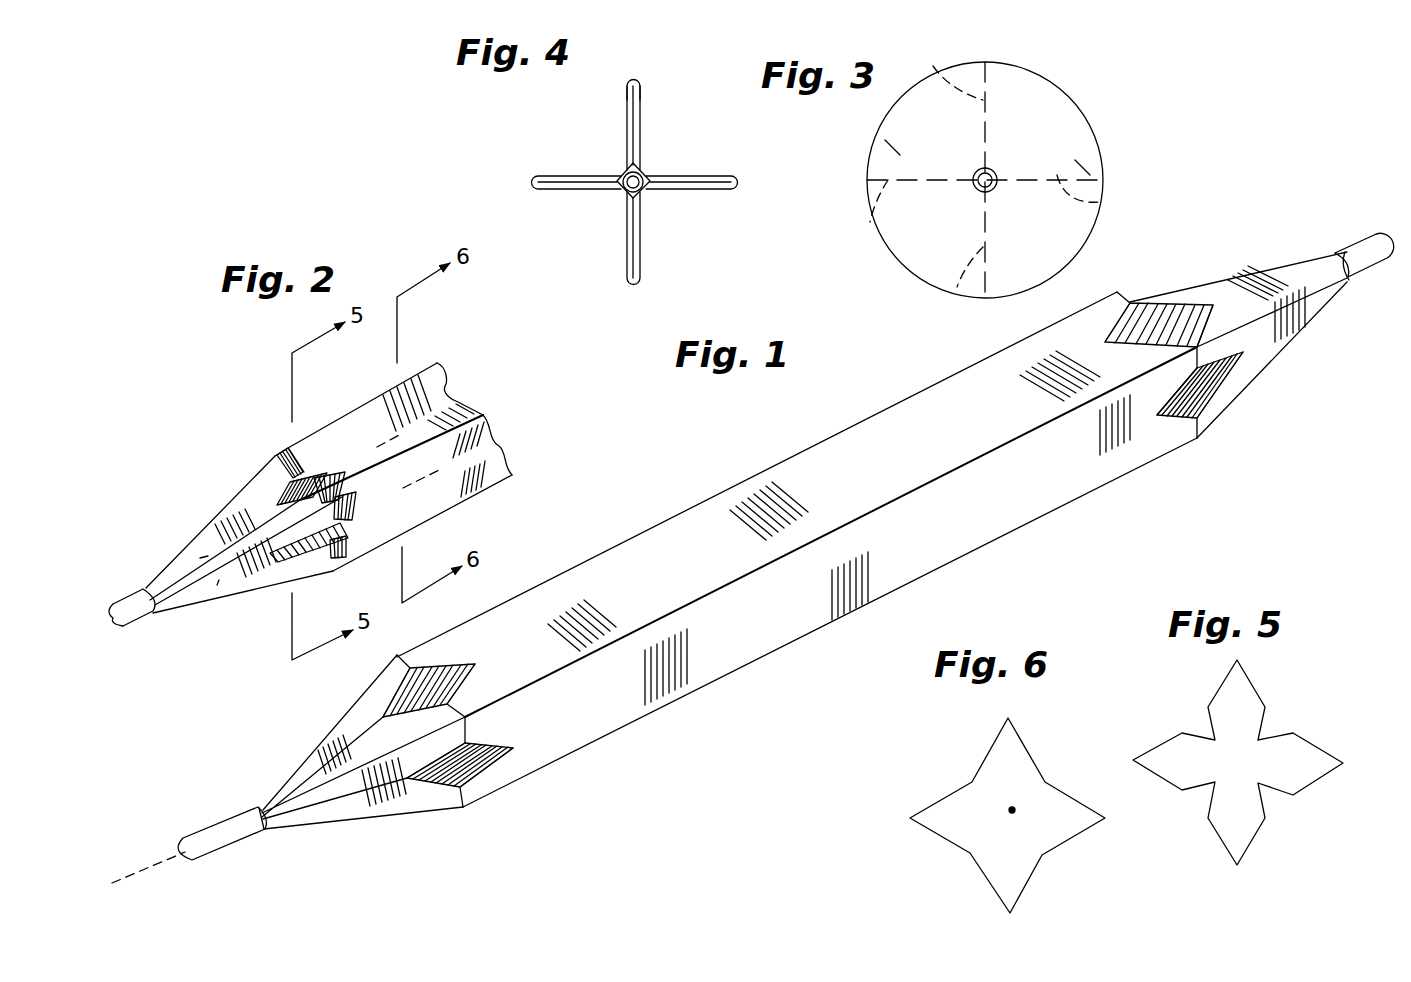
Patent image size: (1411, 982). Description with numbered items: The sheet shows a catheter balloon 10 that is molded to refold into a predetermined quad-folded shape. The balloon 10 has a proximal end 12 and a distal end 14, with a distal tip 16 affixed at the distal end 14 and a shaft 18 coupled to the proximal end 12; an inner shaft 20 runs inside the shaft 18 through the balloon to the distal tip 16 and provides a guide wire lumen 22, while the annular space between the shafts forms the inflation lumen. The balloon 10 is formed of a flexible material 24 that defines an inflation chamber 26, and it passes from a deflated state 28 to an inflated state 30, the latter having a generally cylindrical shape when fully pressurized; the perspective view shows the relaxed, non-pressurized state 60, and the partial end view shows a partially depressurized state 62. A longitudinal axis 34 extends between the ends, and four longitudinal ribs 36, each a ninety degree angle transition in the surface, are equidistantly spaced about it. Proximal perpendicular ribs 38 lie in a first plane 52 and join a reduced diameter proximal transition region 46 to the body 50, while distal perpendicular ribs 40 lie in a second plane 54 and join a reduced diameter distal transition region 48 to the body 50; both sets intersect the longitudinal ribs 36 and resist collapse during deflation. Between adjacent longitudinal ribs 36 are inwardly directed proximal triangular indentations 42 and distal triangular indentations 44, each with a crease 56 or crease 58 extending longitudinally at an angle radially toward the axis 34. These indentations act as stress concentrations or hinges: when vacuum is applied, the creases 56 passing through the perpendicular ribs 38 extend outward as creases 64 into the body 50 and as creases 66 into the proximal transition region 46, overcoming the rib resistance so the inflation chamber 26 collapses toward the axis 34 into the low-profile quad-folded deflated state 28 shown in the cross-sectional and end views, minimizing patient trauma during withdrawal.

In FIG. 1, the balloon 10 is at (770, 443).
In FIG. 2, the balloon 10 is at (192, 480).
In FIG. 3, the balloon 10 is at (995, 58).
In FIG. 4, the balloon 10 is at (650, 107).
In FIG. 1, the proximal end 12 is at (266, 828).
In FIG. 2, the proximal end 12 is at (152, 612).
In FIG. 1, the distal end 14 is at (1357, 278).
In FIG. 1, the distal tip 16 is at (1350, 250).
In FIG. 1, the shaft 18 is at (228, 816).
In FIG. 3, the inner shaft 20 is at (997, 175).
In FIG. 4, the inner shaft 20 is at (648, 190).
In FIG. 3, the guide wire lumen 22 is at (990, 170).
In FIG. 4, the guide wire lumen 22 is at (643, 172).
In FIG. 1, the flexible material 24 is at (856, 417).
In FIG. 3, the flexible material 24 is at (1080, 165).
In FIG. 3, the inflation chamber 26 is at (893, 147).
In FIG. 4, the deflated state 28 is at (602, 145).
In FIG. 3, the inflated state 30 is at (857, 172).
In FIG. 1, the longitudinal axis 34 is at (180, 862).
In FIG. 6, the longitudinal axis 34 is at (1018, 810).
In FIG. 1, the longitudinal ribs 36 is at (637, 530).
In FIG. 2, the longitudinal ribs 36 is at (414, 367).
In FIG. 3, the longitudinal ribs 36 is at (933, 66).
In FIG. 4, the longitudinal ribs 36 is at (632, 80).
In FIG. 6, the longitudinal ribs 36 is at (1008, 716).
In FIG. 1, the proximal perpendicular ribs 38 is at (402, 664).
In FIG. 2, the proximal perpendicular ribs 38 is at (292, 448).
In FIG. 5, the proximal perpendicular ribs 38 is at (1250, 680).
In FIG. 1, the distal perpendicular ribs 40 is at (1130, 300).
In FIG. 1, the proximal triangular indentations 42 is at (437, 663).
In FIG. 2, the proximal triangular indentations 42 is at (283, 490).
In FIG. 5, the proximal triangular indentations 42 is at (1180, 732).
In FIG. 1, the distal triangular indentations 44 is at (1152, 300).
In FIG. 1, the proximal transition region 46 is at (365, 820).
In FIG. 2, the proximal transition region 46 is at (212, 518).
In FIG. 1, the distal transition region 48 is at (1308, 330).
In FIG. 1, the body 50 is at (883, 535).
In FIG. 2, the body 50 is at (363, 413).
In FIG. 1, the first plane 52 is at (462, 808).
In FIG. 2, the first plane 52 is at (278, 452).
In FIG. 5, the first plane 52 is at (1135, 760).
In FIG. 1, the second plane 54 is at (1197, 440).
In FIG. 1, the crease 56 is at (462, 660).
In FIG. 2, the crease 56 is at (325, 477).
In FIG. 5, the crease 56 is at (1212, 738).
In FIG. 1, the crease 58 is at (1187, 300).
In FIG. 1, the non-pressurized state 60 is at (591, 554).
In FIG. 2, the partially depressurized state 62 is at (503, 492).
In FIG. 2, the creases 64 is at (447, 372).
In FIG. 6, the creases 64 is at (972, 781).
In FIG. 2, the creases 66 is at (198, 561).